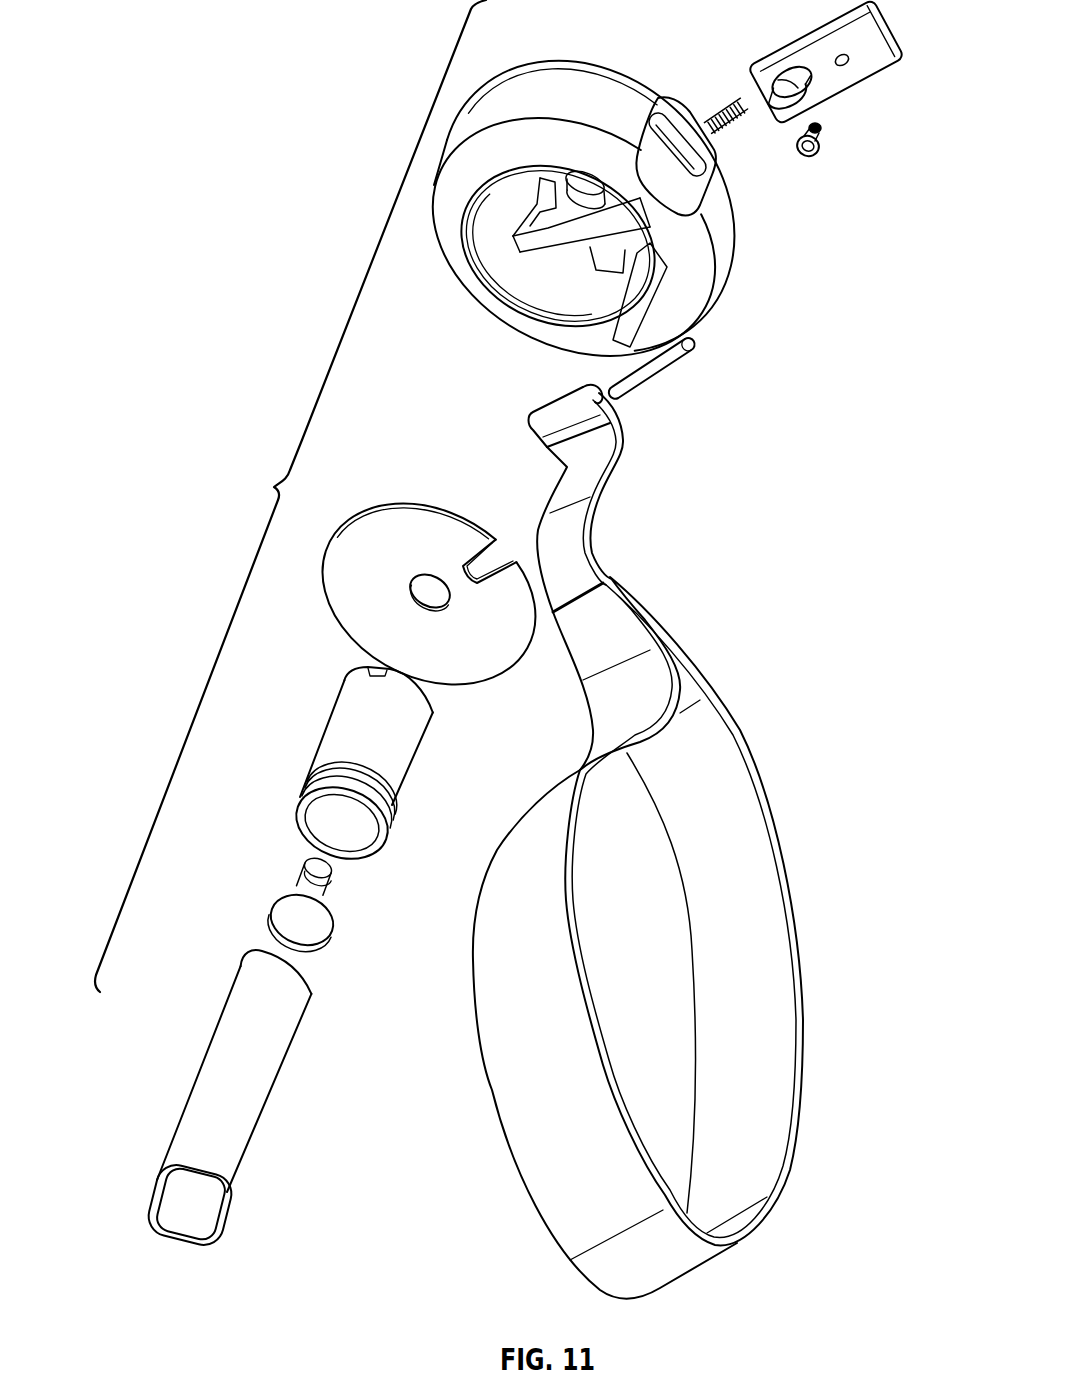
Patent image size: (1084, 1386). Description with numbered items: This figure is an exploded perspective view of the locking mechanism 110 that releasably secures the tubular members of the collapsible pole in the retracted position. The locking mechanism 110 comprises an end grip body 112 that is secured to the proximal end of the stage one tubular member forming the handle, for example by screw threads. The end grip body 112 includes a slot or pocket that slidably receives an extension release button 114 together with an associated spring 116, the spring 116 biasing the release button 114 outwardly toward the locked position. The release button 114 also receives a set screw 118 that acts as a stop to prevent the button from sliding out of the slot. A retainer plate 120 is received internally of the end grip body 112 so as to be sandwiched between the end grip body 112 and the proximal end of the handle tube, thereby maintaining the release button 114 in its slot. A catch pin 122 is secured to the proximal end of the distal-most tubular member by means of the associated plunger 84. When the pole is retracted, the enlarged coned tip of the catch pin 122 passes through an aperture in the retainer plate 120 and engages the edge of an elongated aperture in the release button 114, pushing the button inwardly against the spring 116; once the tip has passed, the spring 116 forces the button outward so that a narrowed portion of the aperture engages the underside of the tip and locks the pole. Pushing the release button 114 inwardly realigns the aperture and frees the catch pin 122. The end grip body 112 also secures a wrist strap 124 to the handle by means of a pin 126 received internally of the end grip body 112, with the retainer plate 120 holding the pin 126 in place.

The locking mechanism 110 is at (290, 496).
The end grip body 112 is at (722, 262).
The extension release button 114 is at (867, 83).
The spring 116 is at (737, 127).
The set screw 118 is at (808, 157).
The pin 126 is at (670, 363).
The wrist strap 124 is at (620, 457).
The retainer plate 120 is at (502, 672).
The plunger 84 is at (413, 763).
The catch pin 122 is at (335, 937).